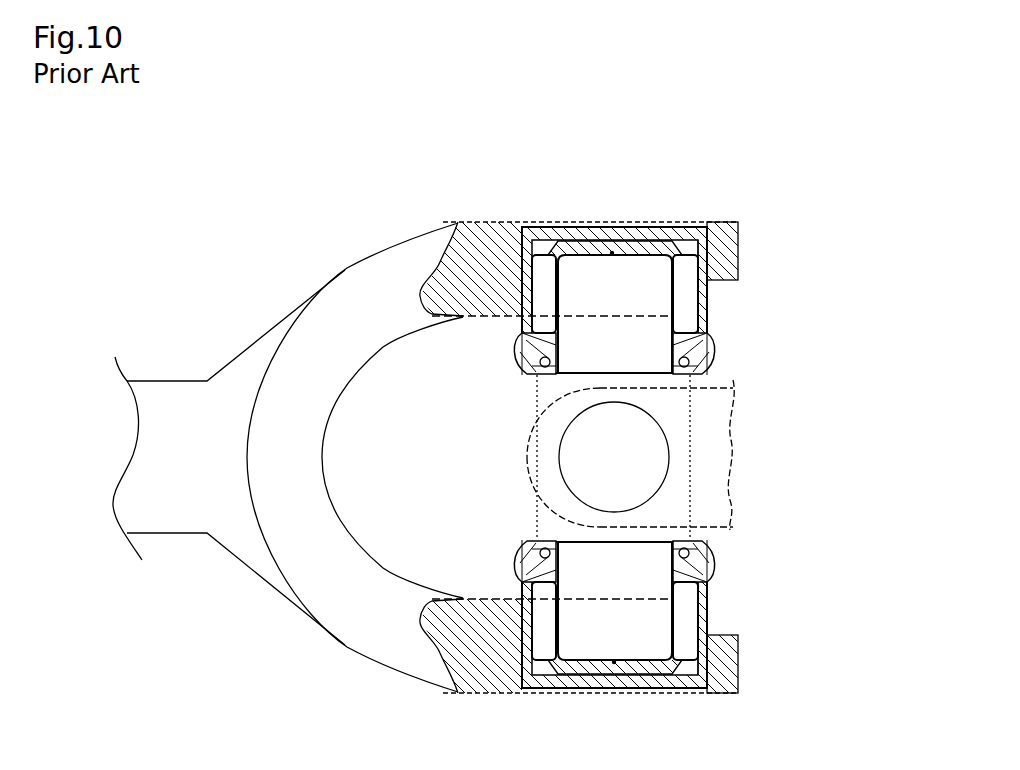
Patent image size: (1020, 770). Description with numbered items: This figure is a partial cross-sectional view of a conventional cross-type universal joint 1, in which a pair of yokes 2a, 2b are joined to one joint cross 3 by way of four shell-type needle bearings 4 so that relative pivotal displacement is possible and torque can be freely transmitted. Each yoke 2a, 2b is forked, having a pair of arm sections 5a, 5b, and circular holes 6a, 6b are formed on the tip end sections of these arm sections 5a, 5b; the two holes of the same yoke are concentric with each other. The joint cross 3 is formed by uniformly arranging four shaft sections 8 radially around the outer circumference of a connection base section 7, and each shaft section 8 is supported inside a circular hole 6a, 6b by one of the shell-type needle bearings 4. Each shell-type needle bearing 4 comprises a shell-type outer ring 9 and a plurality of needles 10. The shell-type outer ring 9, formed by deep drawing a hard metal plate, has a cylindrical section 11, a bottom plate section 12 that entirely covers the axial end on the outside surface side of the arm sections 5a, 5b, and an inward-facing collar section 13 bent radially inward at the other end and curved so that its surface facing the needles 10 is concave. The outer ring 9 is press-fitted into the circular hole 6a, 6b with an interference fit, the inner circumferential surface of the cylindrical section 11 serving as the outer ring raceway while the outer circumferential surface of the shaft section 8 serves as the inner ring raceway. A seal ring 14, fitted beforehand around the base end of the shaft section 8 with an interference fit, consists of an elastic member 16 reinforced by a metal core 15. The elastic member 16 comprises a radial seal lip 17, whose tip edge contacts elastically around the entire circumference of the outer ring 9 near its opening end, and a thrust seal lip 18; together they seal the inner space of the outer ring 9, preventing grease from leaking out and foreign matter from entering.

The universal joint 1 is at (686, 203).
The yoke 2a is at (351, 290).
The yoke 2b is at (718, 471).
The joint cross 3 is at (680, 404).
The shell-type needle bearing 4 is at (611, 250).
The arm section 5a is at (724, 232).
The arm section 5b is at (528, 445).
The circular hole 6a is at (537, 240).
The circular hole 6b is at (563, 468).
The connection base section 7 is at (680, 498).
The shaft section 8 is at (662, 248).
The shell-type outer ring 9 is at (559, 250).
The needle 10 is at (545, 287).
The cylindrical section 11 is at (703, 294).
The bottom plate section 12 is at (640, 245).
The inward-facing collar section 13 is at (518, 338).
The seal ring 14 is at (536, 355).
The metal core 15 is at (540, 375).
The elastic member 16 is at (523, 358).
The radial seal lip 17 is at (709, 346).
The thrust seal lip 18 is at (706, 334).